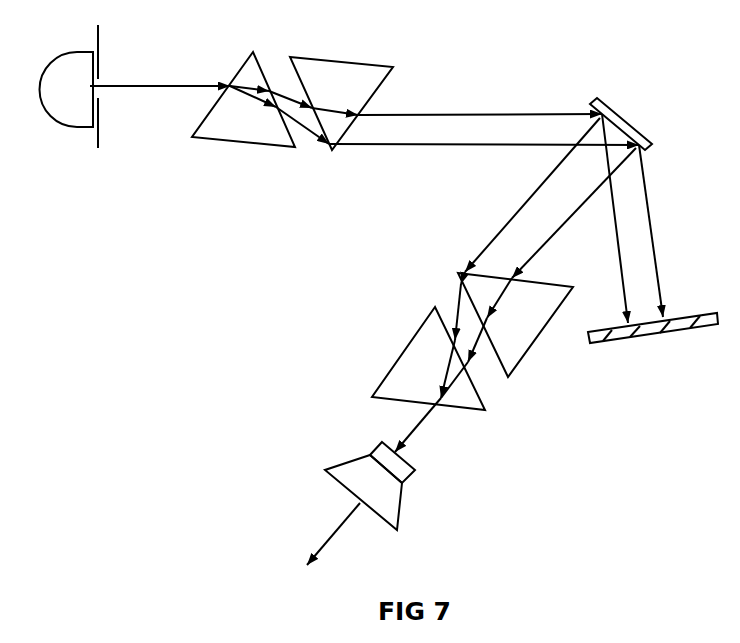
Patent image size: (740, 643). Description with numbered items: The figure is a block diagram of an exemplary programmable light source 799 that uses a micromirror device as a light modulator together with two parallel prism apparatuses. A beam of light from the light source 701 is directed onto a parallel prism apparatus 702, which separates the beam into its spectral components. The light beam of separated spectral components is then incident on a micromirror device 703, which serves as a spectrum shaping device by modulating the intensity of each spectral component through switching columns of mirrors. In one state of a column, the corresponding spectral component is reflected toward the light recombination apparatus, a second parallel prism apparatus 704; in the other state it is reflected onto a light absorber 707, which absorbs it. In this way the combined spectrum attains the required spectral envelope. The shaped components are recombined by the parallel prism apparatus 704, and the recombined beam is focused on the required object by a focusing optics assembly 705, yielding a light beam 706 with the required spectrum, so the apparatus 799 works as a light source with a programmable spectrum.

The light source 701 is at (78, 80).
The parallel prism apparatus 702 is at (233, 78).
The micromirror device 703 is at (608, 110).
The parallel prism apparatus for light recombination 704 is at (410, 367).
The focusing optics assembly 705 is at (402, 505).
The light beam 706 is at (333, 545).
The light absorber 707 is at (643, 332).
The programmable light source 799 is at (500, 74).